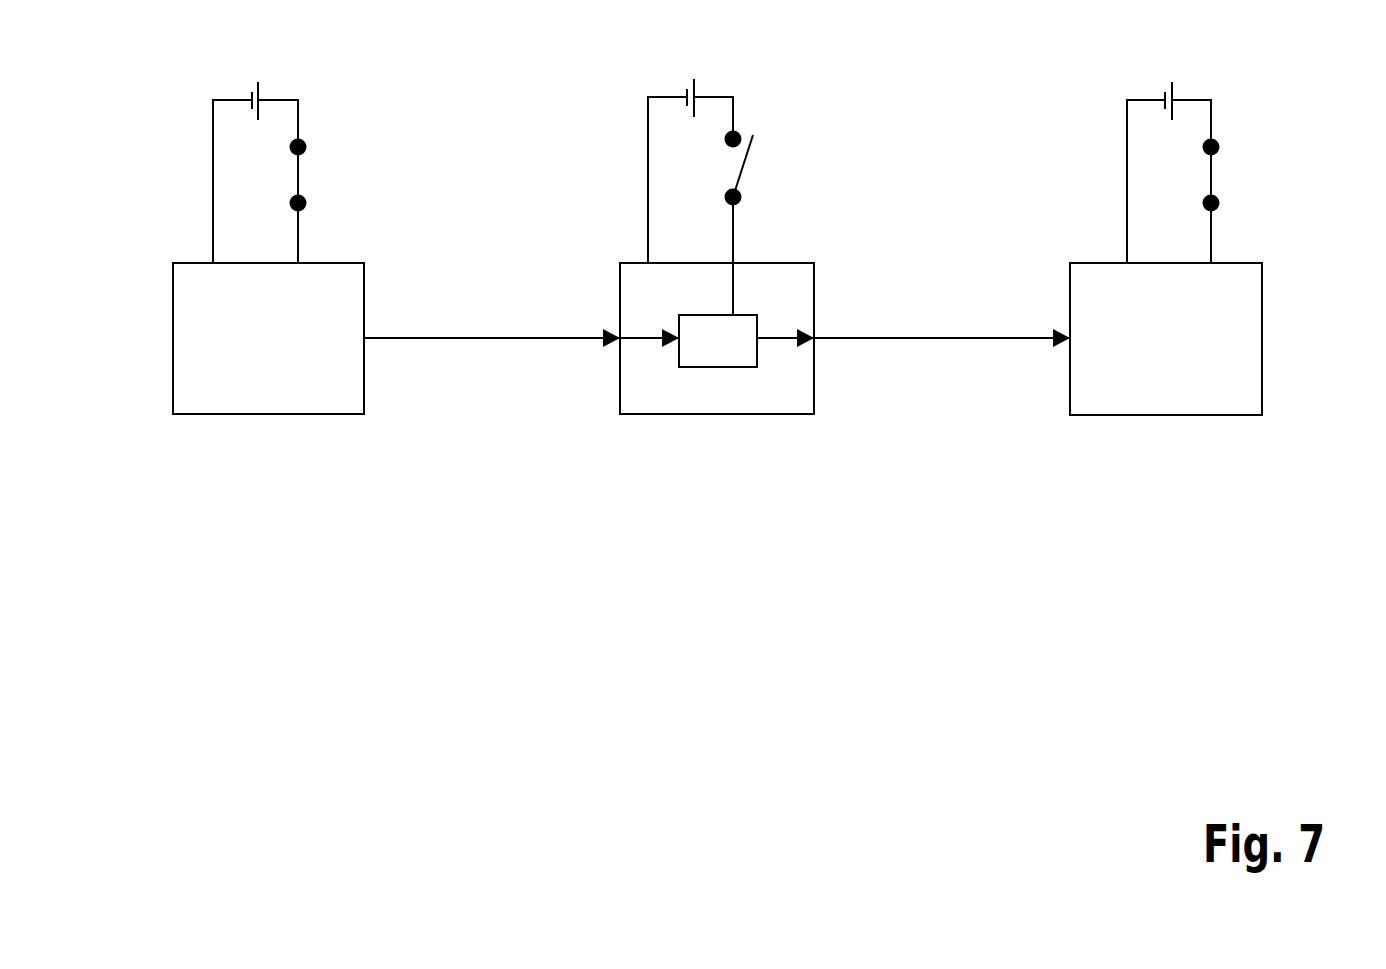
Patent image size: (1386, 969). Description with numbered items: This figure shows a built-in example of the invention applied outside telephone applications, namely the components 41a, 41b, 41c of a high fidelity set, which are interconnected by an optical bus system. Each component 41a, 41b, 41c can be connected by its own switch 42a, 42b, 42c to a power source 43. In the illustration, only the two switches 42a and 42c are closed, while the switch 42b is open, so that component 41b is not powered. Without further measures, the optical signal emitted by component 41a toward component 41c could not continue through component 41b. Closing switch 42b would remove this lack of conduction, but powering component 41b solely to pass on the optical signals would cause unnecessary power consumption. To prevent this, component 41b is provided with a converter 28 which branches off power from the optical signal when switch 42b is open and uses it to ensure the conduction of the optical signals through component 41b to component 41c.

The converter 28 is at (712, 358).
The component 41a is at (268, 338).
The component 41b is at (790, 417).
The component 41c is at (1166, 339).
The switch 42a is at (299, 177).
The switch 42b is at (743, 173).
The switch 42c is at (1212, 173).
The power source 43 is at (283, 75).